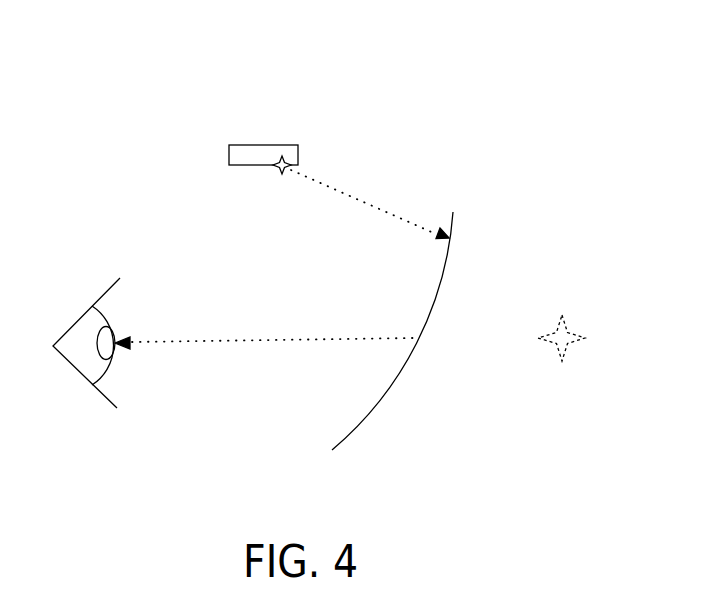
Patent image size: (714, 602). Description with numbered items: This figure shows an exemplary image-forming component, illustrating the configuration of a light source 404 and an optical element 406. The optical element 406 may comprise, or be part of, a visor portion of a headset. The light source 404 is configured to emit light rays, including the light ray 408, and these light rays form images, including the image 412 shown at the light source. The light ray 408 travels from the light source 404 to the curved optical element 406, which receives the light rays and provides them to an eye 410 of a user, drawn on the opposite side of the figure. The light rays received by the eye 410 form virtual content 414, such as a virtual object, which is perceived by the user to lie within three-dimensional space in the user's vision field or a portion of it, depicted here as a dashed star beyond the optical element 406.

The light source 404 is at (265, 146).
The optical element 406 is at (374, 407).
The light ray 408 is at (353, 198).
The eye 410 is at (107, 325).
The image 412 is at (286, 169).
The virtual content 414 is at (558, 327).